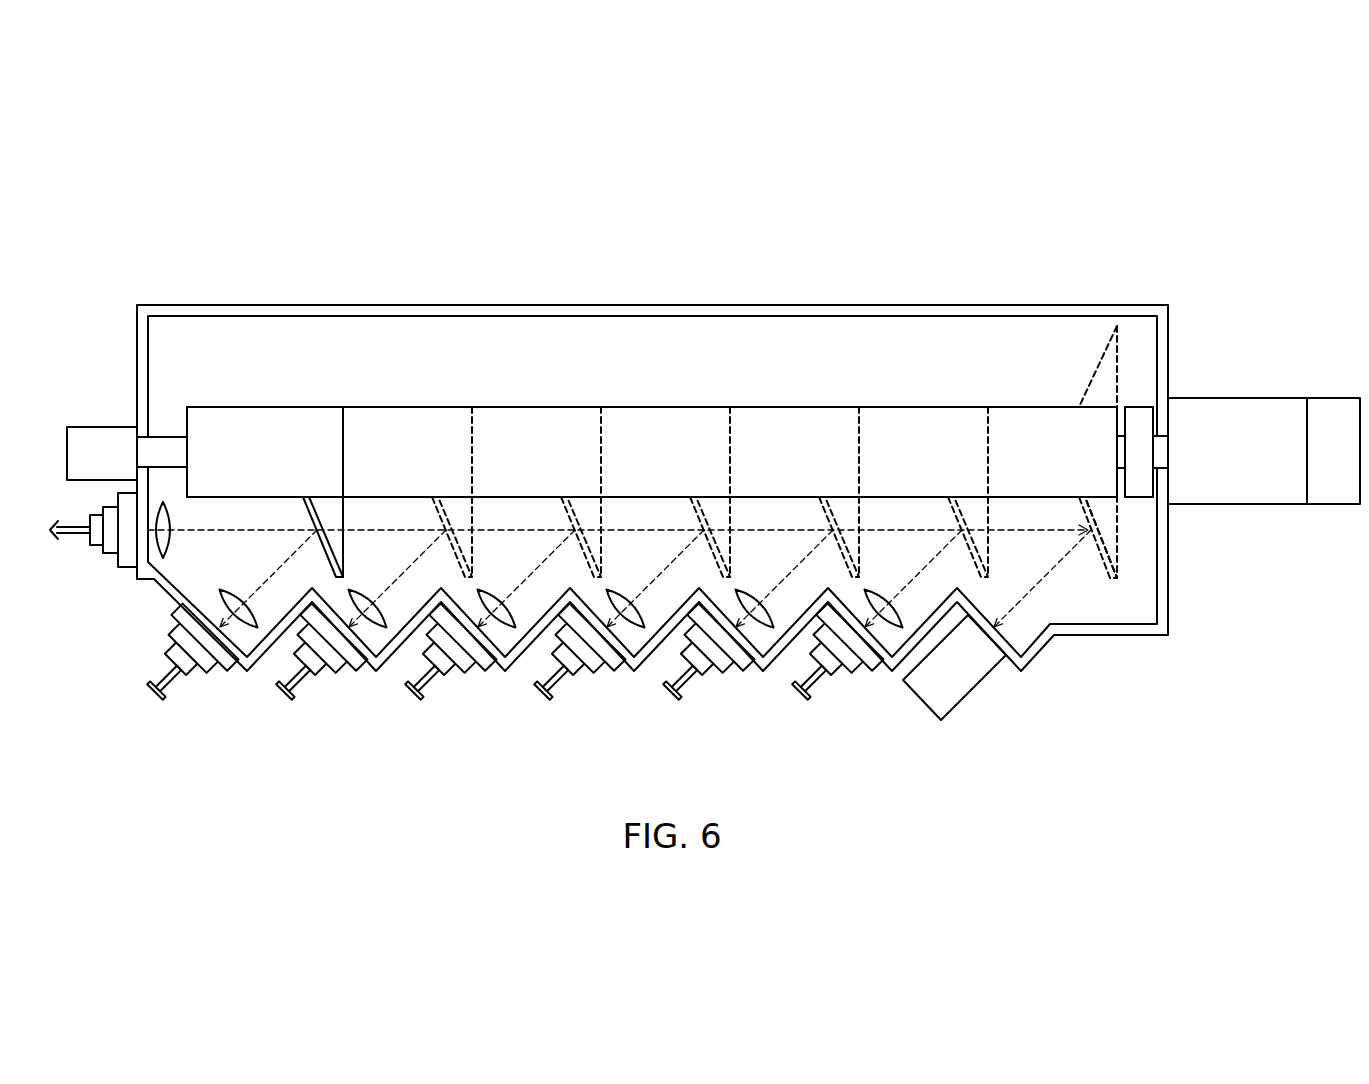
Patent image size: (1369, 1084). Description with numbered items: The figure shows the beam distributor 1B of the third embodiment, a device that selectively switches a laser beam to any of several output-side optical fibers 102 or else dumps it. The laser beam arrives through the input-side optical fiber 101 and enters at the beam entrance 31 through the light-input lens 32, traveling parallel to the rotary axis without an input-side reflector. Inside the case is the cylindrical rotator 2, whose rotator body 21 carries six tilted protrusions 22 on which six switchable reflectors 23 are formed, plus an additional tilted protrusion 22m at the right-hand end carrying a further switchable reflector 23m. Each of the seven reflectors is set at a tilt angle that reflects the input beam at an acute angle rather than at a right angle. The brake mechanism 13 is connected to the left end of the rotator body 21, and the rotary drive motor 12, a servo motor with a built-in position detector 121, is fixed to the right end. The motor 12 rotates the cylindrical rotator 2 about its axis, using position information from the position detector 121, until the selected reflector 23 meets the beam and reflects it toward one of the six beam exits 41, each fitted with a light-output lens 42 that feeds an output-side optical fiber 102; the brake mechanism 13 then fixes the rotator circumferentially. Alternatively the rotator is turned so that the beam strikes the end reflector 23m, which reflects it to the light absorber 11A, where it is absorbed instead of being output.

The beam distributor 1B is at (1143, 250).
The cylindrical rotator 2 is at (620, 408).
The rotator body 21 is at (518, 407).
The tilted protrusion 22 is at (328, 507).
The tilted protrusion 22m is at (1101, 376).
The switchable reflector 23 is at (305, 518).
The switchable reflector 23m is at (1100, 562).
The rotary drive motor 12 is at (1232, 412).
The position detector 121 is at (1330, 412).
The brake mechanism 13 is at (98, 432).
The beam entrance 31 is at (120, 562).
The light-input lens 32 is at (160, 560).
The input-side optical fiber 101 is at (73, 530).
The beam exit 41 is at (870, 670).
The light-output lens 42 is at (902, 630).
The output-side optical fiber 102 is at (816, 681).
The light absorber 11A is at (968, 675).